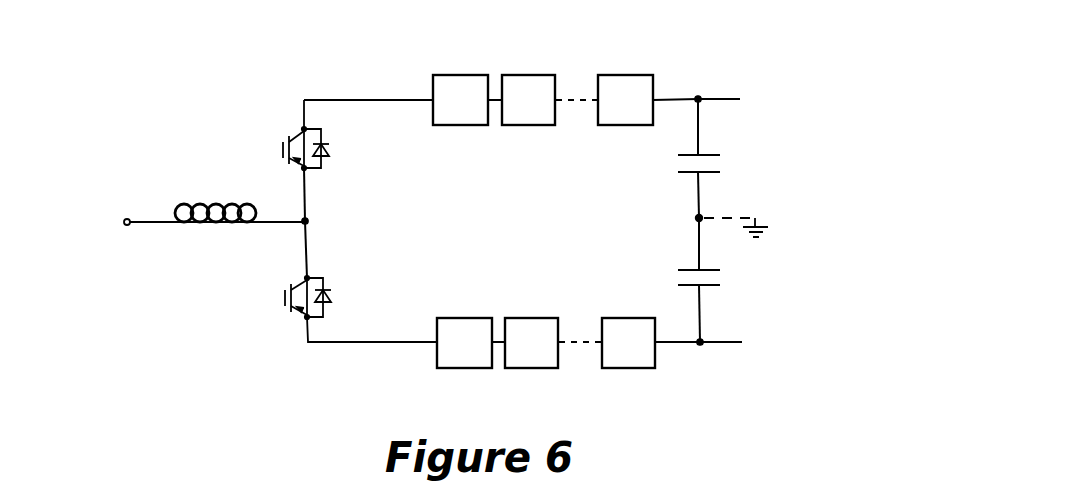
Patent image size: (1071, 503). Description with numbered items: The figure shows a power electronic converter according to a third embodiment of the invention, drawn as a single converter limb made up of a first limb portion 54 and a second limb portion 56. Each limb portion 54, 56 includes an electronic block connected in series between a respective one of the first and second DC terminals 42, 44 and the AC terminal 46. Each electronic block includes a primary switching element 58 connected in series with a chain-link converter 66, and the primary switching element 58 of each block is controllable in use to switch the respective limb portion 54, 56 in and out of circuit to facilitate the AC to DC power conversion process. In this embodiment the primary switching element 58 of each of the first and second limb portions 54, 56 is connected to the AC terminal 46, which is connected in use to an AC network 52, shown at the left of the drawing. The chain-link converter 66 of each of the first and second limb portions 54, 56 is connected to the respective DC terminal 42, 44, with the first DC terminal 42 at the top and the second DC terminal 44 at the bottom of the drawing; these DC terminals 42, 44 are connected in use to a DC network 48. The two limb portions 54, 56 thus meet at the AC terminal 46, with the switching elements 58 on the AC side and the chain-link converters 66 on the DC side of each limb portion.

The first DC terminal 42 is at (698, 88).
The second DC terminal 44 is at (703, 352).
The AC terminal 46 is at (317, 216).
The DC network 48 is at (835, 102).
The AC network 52 is at (99, 226).
The first limb portion 54 is at (243, 160).
The second limb portion 56 is at (236, 286).
The primary switching element 58 is at (300, 127).
The chain-link converter 66 is at (535, 140).